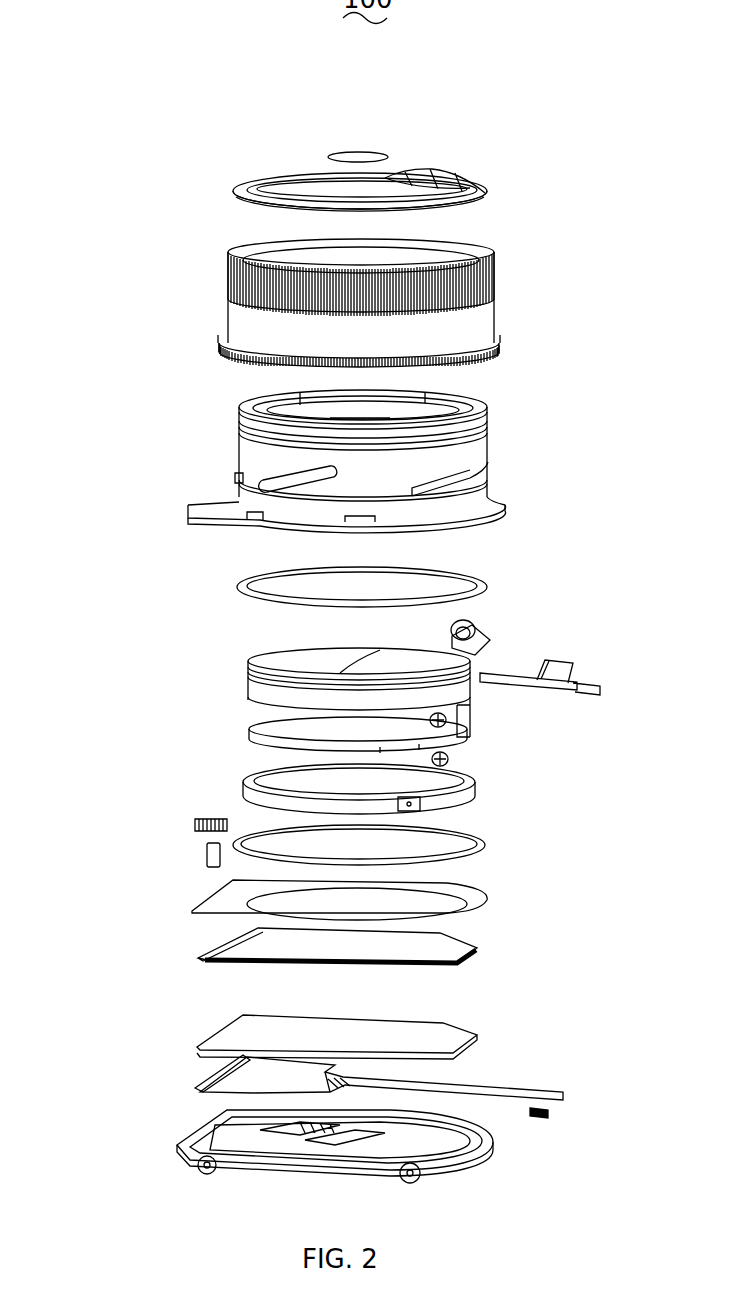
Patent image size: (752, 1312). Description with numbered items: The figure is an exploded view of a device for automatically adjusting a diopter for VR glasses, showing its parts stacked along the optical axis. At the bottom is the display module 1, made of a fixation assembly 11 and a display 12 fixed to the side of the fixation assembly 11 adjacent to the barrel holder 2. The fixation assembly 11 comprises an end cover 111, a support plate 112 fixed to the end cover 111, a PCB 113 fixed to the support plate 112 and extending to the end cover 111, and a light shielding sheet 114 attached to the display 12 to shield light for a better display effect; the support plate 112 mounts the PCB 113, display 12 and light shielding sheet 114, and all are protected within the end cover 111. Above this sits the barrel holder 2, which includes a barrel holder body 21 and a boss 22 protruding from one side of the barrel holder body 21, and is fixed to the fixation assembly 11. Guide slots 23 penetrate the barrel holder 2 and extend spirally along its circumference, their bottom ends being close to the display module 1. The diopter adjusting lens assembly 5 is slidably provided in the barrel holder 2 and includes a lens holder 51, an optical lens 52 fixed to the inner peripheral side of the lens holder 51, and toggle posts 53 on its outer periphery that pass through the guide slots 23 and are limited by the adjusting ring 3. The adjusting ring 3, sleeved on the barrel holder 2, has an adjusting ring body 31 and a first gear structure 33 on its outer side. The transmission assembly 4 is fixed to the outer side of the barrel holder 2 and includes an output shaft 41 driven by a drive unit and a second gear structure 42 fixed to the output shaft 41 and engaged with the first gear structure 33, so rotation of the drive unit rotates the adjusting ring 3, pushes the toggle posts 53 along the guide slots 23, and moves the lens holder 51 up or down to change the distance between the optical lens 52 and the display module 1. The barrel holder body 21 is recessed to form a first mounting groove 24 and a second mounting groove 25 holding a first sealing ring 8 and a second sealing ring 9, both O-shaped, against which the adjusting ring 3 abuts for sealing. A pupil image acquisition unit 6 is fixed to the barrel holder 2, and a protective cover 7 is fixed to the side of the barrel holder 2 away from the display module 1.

The display module 1 is at (483, 1033).
The fixation assembly 11 is at (288, 1031).
The end cover 111 is at (286, 1146).
The support plate 112 is at (225, 1032).
The PCB 113 is at (198, 1086).
The light shielding sheet 114 is at (217, 905).
The display 12 is at (466, 946).
The barrel holder 2 is at (301, 467).
The barrel holder body 21 is at (245, 453).
The boss 22 is at (324, 524).
The guide slot 23 is at (267, 477).
The first mounting groove 24 is at (240, 420).
The second mounting groove 25 is at (235, 477).
The adjusting ring 3 is at (413, 303).
The adjusting ring body 31 is at (490, 307).
The first gear structure 33 is at (401, 347).
The transmission assembly 4 is at (151, 829).
The output shaft 41 is at (207, 855).
The second gear structure 42 is at (197, 823).
The diopter adjusting lens assembly 5 is at (449, 731).
The lens holder 51 is at (473, 797).
The optical lens 52 is at (470, 740).
The toggle post 53 is at (475, 712).
The pupil image acquisition unit 6 is at (487, 628).
The protective cover 7 is at (480, 197).
The first sealing ring 8 is at (485, 853).
The second sealing ring 9 is at (473, 583).